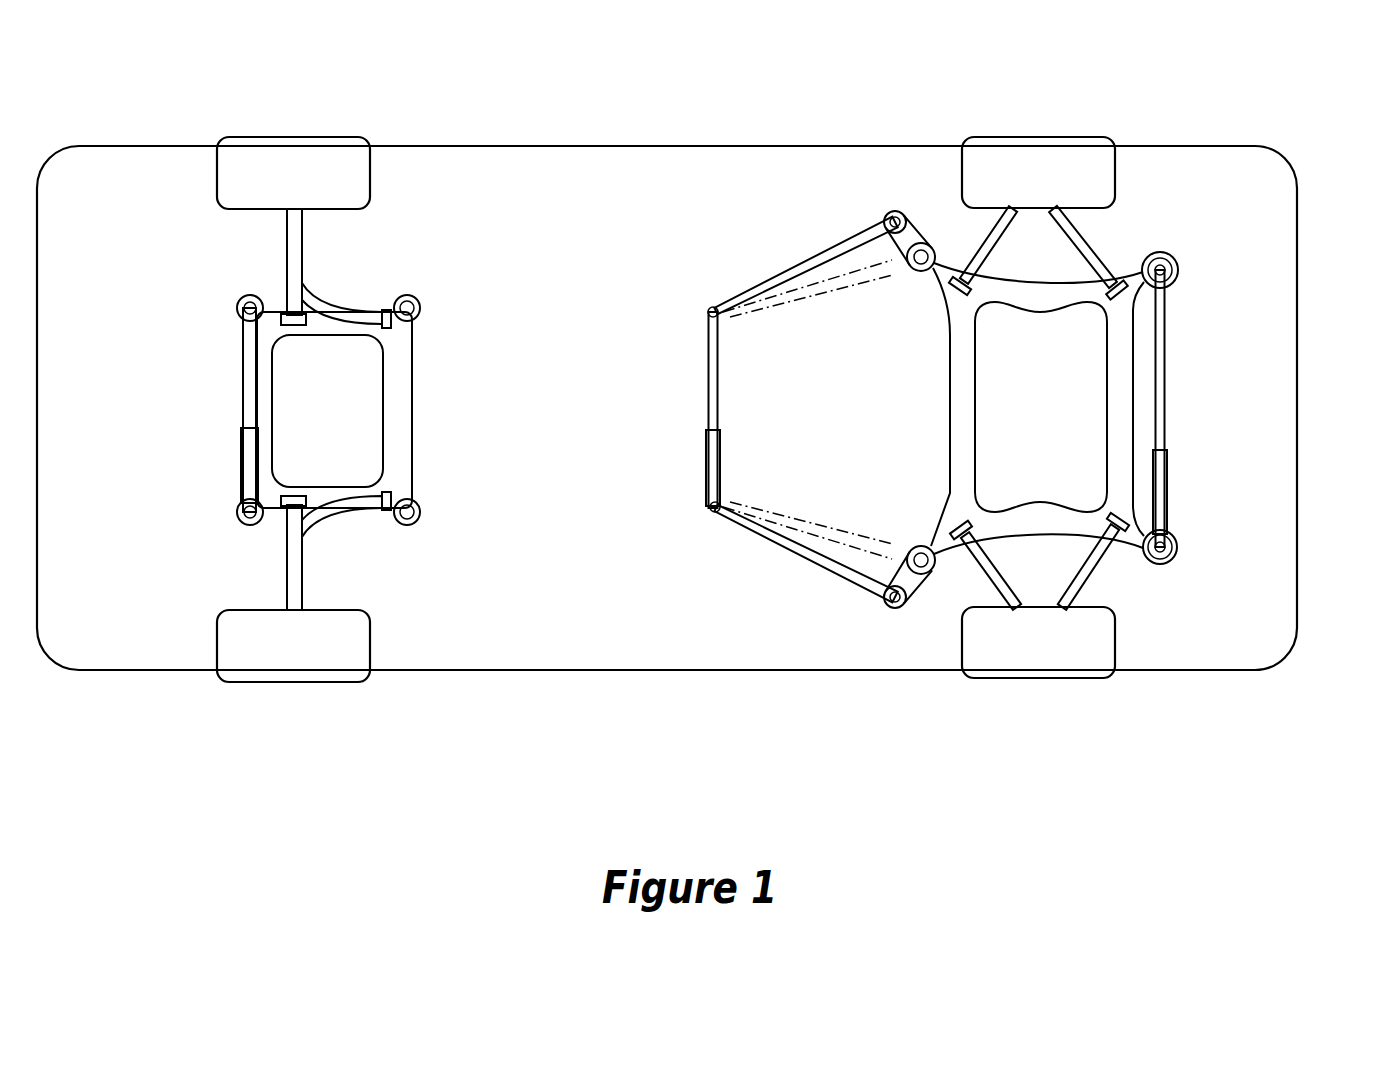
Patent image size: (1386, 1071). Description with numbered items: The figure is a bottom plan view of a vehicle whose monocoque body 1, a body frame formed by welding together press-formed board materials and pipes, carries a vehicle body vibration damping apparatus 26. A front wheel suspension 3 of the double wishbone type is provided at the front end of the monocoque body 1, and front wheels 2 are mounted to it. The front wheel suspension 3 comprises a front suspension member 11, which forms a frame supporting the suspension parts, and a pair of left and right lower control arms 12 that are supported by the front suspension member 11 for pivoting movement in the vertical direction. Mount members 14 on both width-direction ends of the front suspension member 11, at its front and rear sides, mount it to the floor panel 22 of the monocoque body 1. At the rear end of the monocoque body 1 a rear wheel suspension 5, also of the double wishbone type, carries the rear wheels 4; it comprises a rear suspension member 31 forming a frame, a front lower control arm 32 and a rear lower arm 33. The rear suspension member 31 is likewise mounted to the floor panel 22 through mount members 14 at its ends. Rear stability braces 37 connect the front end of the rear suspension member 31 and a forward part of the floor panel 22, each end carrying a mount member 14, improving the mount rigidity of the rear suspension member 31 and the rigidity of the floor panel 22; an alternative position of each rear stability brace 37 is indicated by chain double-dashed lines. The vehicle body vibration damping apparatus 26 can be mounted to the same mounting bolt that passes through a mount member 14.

The monocoque body 1 is at (700, 388).
The front wheels 2 is at (300, 137).
The front wheel suspension 3 is at (401, 288).
The rear wheels 4 is at (1040, 153).
The rear wheel suspension 5 is at (1044, 397).
The front suspension member 11 is at (412, 427).
The lower control arms 12 is at (285, 254).
The mount members 14 is at (243, 296).
The floor panel 22 is at (617, 648).
The vehicle body vibration damping apparatus 26 is at (241, 473).
The rear suspension member 31 is at (948, 392).
The front lower control arm 32 is at (980, 230).
The rear lower arm 33 is at (1097, 226).
The rear stability brace 37 is at (845, 268).